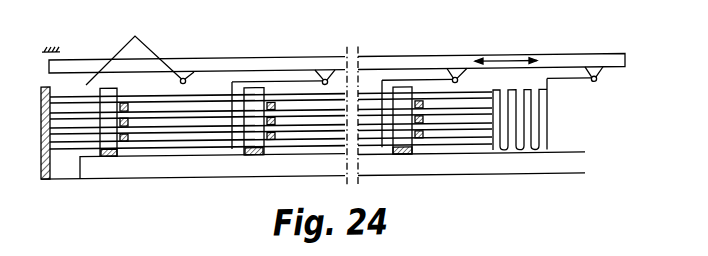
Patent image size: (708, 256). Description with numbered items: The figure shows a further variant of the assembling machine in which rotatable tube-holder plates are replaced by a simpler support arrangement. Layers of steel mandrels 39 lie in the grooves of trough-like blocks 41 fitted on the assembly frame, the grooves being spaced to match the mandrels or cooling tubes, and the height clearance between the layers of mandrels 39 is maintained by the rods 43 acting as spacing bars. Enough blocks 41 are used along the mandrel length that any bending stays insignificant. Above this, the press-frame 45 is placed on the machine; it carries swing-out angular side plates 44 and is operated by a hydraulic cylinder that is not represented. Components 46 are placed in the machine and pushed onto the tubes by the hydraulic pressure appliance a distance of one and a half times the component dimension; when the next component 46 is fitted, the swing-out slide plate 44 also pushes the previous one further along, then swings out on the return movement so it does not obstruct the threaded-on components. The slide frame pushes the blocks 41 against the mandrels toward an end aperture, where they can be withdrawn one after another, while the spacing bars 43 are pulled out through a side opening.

The steel mandrels 39 is at (203, 100).
The trough-like blocks 41 is at (102, 159).
The rods 43 is at (125, 139).
The swing-out angular side plates 44 is at (148, 46).
The press-frame 45 is at (297, 64).
The components 46 is at (510, 95).